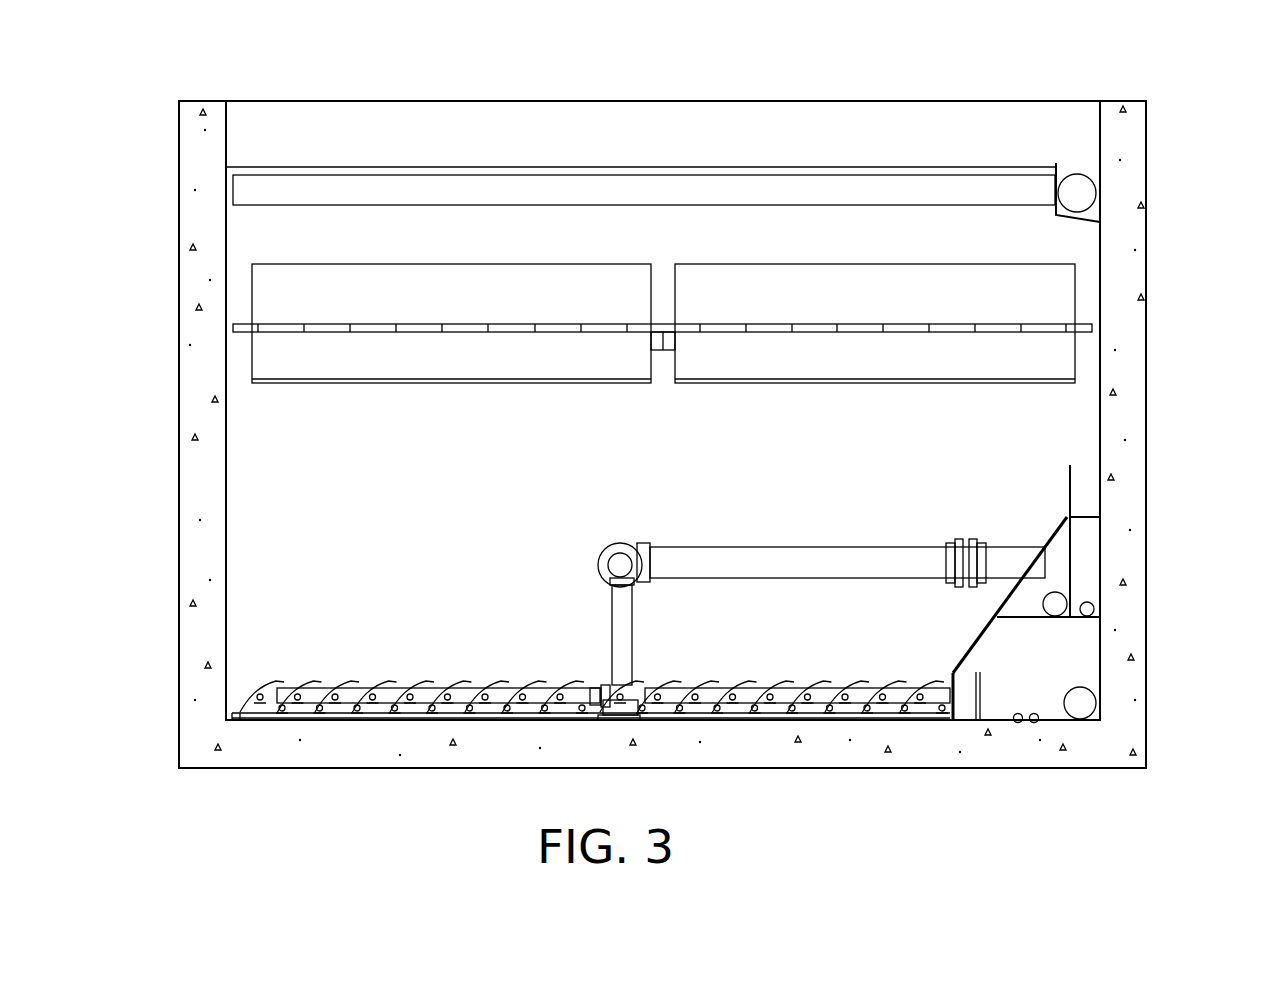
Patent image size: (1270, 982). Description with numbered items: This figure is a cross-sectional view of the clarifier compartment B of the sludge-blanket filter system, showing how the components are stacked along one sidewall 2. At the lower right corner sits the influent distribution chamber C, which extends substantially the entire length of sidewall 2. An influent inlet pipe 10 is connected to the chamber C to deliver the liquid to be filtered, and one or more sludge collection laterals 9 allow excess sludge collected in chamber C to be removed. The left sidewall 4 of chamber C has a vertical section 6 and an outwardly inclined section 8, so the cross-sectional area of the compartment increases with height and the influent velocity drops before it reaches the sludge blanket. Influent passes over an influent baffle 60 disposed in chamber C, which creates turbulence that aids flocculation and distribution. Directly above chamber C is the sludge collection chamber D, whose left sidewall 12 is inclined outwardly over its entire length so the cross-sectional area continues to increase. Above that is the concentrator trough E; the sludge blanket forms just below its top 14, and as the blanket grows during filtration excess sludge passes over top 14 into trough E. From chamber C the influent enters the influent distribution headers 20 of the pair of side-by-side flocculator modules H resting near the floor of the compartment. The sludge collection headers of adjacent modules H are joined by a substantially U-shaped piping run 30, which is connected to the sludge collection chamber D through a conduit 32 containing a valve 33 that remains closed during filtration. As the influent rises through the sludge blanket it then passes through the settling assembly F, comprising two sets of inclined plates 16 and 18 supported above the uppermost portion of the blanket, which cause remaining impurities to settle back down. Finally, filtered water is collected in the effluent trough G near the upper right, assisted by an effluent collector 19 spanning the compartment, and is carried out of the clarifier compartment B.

The sidewall 2 is at (1147, 577).
The clarifier compartment B is at (1133, 410).
The effluent collector 19 is at (605, 190).
The effluent trough G is at (1075, 172).
The settling assembly F is at (662, 376).
The inclined plates 16 is at (561, 385).
The inclined plates 18 is at (748, 385).
The conduit 32 is at (805, 545).
The valve 33 is at (960, 542).
The U-shaped piping run 30 is at (620, 622).
The vertical section 6 is at (960, 722).
The flocculator modules H is at (362, 680).
The influent distribution header 20 is at (724, 680).
The top 14 is at (1062, 506).
The concentrator trough E is at (1095, 498).
The left sidewall 12 is at (1058, 516).
The sludge collection chamber D is at (1045, 545).
The outwardly inclined section 8 is at (978, 655).
The left sidewall 4 is at (947, 668).
The influent baffle 60 is at (980, 672).
The influent distribution chamber C is at (1095, 662).
The influent inlet pipe 10 is at (1098, 712).
The sludge collection laterals 9 is at (1020, 724).